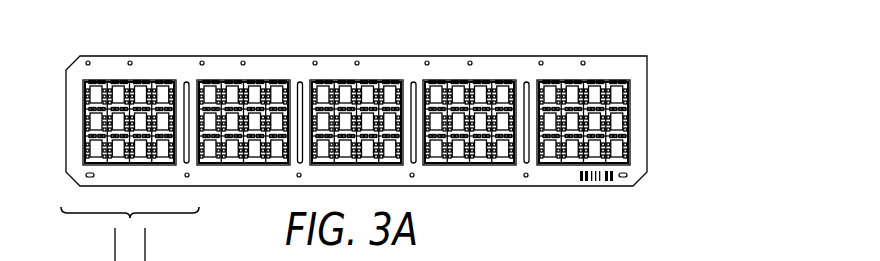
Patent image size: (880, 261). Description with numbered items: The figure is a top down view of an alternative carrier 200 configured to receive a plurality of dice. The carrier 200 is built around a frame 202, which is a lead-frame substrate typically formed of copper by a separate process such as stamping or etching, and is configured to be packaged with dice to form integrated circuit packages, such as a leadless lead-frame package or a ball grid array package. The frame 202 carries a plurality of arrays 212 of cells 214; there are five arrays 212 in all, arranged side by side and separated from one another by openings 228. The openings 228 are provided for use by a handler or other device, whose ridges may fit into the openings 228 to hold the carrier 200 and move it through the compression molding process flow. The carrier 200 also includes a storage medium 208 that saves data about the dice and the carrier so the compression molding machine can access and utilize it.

The carrier 200 is at (640, 82).
The frame 202 is at (600, 67).
The arrays 212 is at (158, 63).
The cells 214 is at (365, 93).
The openings 228 is at (415, 164).
The storage medium 208 is at (590, 182).